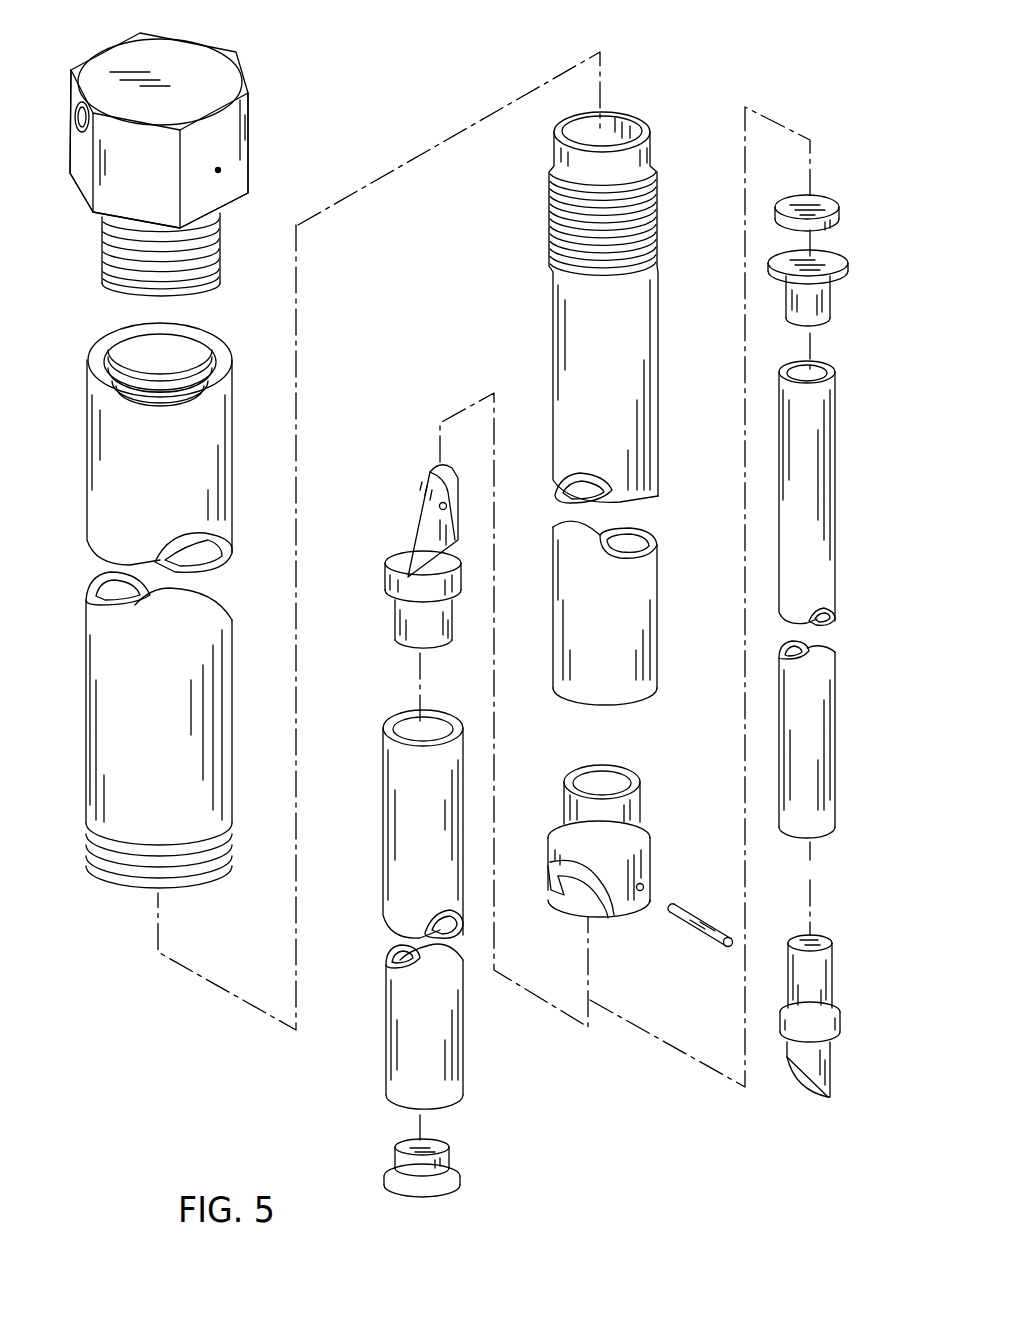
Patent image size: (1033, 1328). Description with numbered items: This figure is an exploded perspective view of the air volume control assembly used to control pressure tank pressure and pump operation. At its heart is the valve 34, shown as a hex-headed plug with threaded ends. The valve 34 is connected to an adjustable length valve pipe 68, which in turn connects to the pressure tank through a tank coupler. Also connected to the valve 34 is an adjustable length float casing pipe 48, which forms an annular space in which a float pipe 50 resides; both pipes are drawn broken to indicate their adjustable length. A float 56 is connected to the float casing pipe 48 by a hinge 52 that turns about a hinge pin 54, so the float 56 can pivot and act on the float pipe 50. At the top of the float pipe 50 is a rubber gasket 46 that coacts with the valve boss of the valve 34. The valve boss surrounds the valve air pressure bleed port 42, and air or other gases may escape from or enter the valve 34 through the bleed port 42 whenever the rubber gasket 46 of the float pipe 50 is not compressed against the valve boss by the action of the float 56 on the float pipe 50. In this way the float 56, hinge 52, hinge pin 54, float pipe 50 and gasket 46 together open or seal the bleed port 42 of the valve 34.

The valve 34 is at (200, 66).
The valve air pressure bleed port 42 is at (218, 170).
The rubber gasket 46 is at (820, 201).
The float casing pipe 48 is at (580, 320).
The float pipe 50 is at (812, 550).
The hinge 52 is at (650, 855).
The hinge pin 54 is at (698, 913).
The float 56 is at (428, 518).
The valve pipe 68 is at (130, 675).